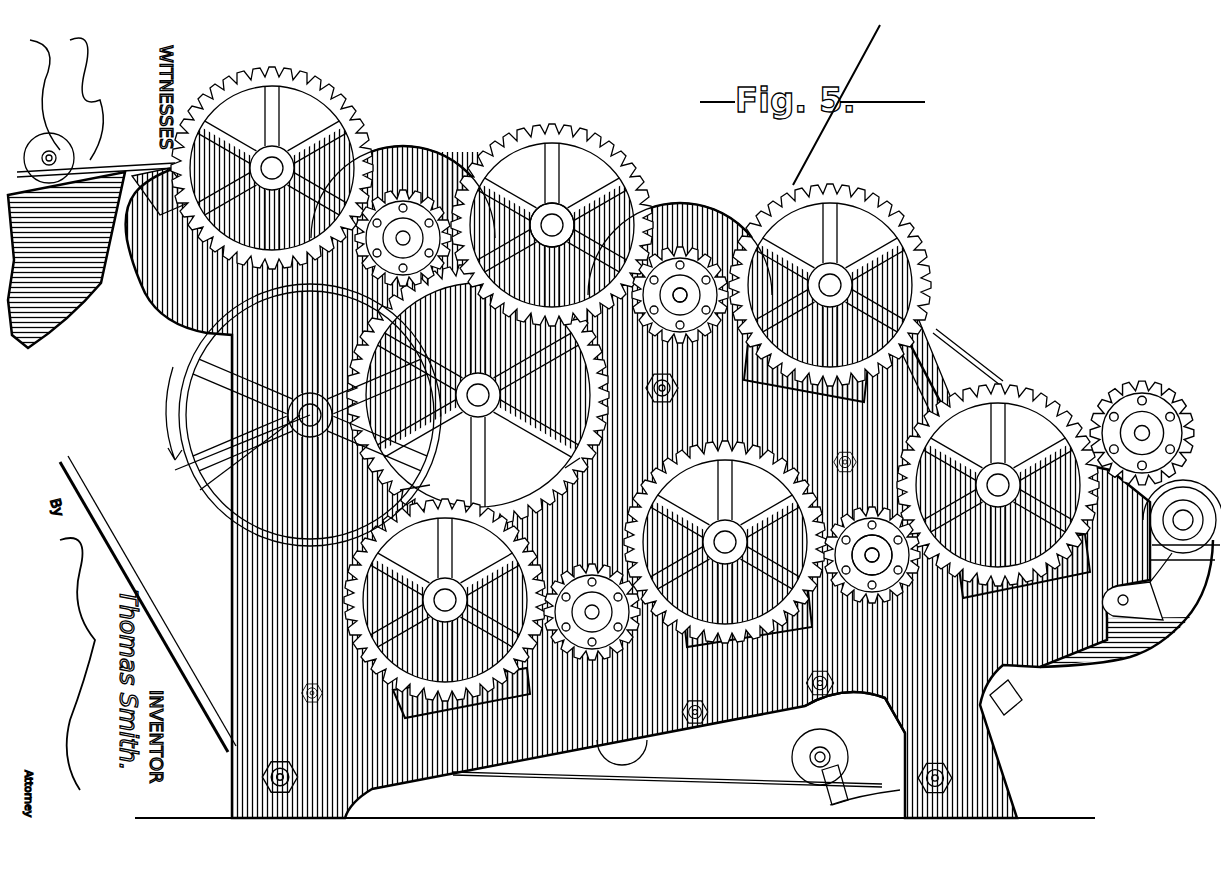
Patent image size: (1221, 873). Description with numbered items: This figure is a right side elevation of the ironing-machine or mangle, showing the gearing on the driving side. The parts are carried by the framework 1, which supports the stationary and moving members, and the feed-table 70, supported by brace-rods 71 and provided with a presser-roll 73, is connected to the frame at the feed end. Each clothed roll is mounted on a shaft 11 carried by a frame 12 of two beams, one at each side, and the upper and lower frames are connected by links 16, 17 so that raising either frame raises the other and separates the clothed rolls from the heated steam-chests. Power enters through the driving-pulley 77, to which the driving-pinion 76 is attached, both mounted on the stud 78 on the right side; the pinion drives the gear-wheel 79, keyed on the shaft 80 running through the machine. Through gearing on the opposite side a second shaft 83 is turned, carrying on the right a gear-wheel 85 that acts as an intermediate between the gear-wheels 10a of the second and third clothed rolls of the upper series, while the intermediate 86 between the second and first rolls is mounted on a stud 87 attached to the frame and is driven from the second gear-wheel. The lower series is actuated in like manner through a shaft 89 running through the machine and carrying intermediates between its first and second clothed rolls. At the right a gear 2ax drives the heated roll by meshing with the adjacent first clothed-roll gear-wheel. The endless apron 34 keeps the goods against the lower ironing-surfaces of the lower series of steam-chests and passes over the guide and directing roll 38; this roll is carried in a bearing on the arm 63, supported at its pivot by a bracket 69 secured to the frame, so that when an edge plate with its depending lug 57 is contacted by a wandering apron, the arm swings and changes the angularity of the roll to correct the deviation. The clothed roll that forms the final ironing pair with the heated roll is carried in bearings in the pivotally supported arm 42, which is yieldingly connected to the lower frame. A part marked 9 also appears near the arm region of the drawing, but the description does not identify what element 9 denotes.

The framework 1 is at (673, 482).
The gear 2ax is at (1150, 388).
The rod 9 is at (960, 378).
The gear-wheel 10a is at (352, 118).
The shaft 11 is at (1190, 490).
The frame 12 is at (403, 195).
The link 16 is at (952, 405).
The link 17 is at (418, 485).
The endless apron 34 is at (650, 784).
The guide and directing roll 38 is at (795, 752).
The arm 42 is at (1108, 668).
The depending lug 57 is at (860, 585).
The arm 63 is at (909, 745).
The bracket 69 is at (826, 803).
The feed-table 70 is at (66, 260).
The brace-rod 71 is at (158, 600).
The presser-roll 73 is at (106, 172).
The driving-pinion 76 is at (292, 415).
The driving-pulley 77 is at (236, 463).
The stud 78 is at (230, 451).
The gear-wheel 79 is at (578, 456).
The shaft 80 is at (485, 405).
The shaft 83 is at (686, 290).
The gear-wheel 85 is at (720, 248).
The intermediate 86 is at (430, 175).
The stud 87 is at (545, 220).
The shaft 89 is at (875, 555).